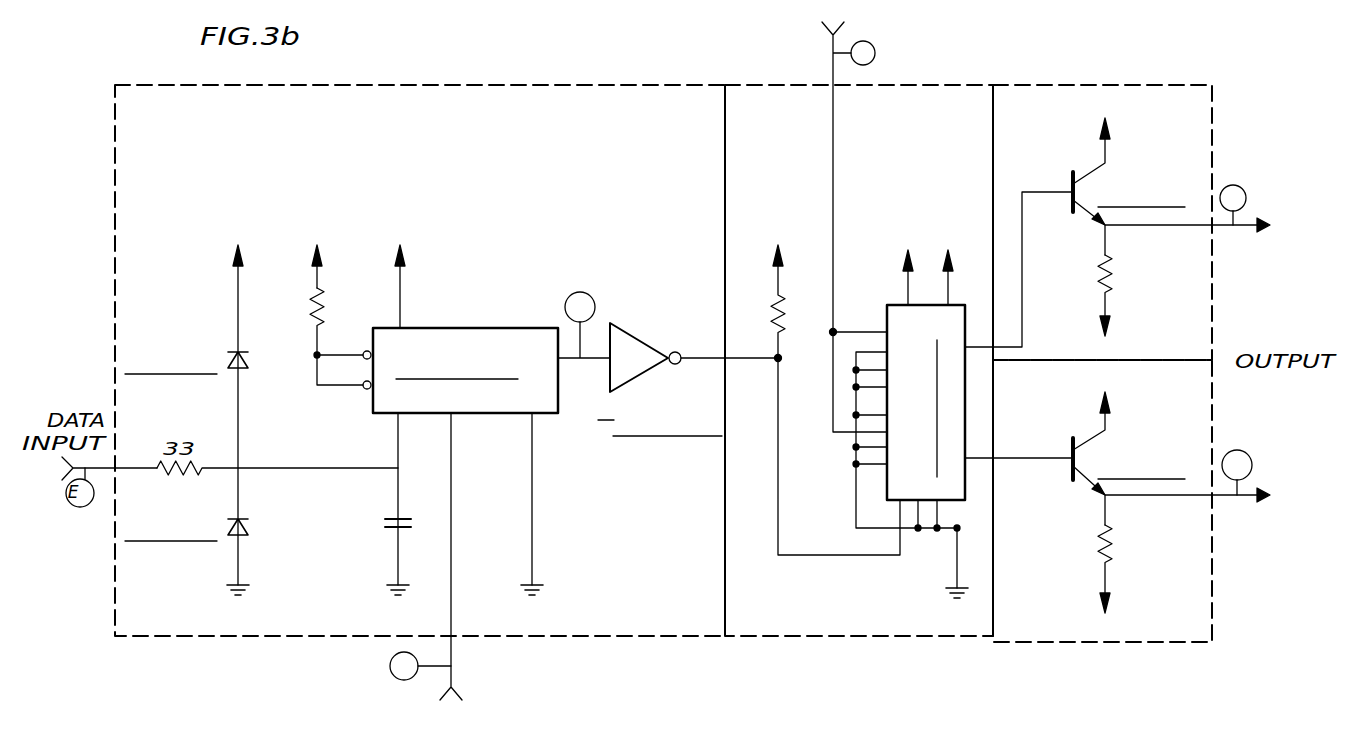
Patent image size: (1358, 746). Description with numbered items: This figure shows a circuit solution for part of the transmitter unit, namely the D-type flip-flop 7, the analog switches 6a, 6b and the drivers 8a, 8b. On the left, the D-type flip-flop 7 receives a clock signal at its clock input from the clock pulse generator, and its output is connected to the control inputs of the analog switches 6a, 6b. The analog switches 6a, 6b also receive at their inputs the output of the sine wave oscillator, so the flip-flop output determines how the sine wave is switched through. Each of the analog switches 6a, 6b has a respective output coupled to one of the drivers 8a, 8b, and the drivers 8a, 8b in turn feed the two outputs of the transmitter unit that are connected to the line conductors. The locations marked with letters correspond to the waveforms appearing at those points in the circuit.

The D-type flip-flop 7 is at (475, 85).
The analog switch 6a is at (938, 66).
The analog switch 6b is at (963, 395).
The driver 8a is at (1148, 85).
The driver 8b is at (1200, 644).